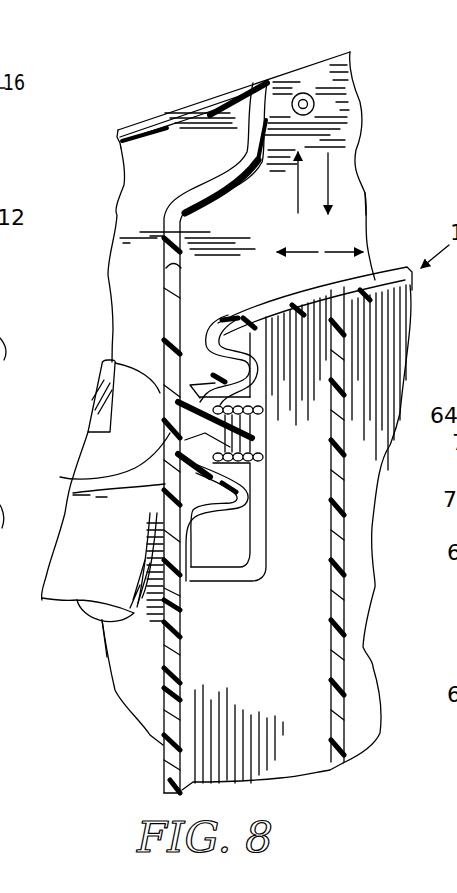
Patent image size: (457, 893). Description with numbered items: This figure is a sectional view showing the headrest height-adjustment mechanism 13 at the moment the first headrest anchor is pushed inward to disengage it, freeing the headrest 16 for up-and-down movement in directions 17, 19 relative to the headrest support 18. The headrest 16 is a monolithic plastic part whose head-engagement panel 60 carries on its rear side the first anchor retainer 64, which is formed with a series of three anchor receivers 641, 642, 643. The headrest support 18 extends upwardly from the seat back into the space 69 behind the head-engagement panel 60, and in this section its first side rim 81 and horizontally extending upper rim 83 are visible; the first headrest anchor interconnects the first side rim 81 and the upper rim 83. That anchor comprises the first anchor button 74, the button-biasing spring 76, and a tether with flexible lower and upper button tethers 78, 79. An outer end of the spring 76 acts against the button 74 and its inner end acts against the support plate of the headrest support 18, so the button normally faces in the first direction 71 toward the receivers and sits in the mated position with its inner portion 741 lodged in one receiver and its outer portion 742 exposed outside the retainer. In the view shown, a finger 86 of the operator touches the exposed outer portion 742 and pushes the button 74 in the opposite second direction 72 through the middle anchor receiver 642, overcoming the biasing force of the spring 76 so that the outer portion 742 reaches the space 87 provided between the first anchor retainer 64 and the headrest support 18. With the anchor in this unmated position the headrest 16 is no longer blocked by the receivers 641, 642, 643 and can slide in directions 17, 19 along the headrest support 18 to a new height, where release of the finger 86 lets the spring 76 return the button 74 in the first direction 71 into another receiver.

The headrest 16 is at (373, 113).
The space 69 is at (320, 153).
The down direction 19 is at (340, 210).
The up direction 17 is at (296, 190).
The head-engagement panel 60 is at (350, 225).
The second direction 72 is at (342, 251).
The first direction 71 is at (300, 252).
The first anchor retainer 64 is at (165, 243).
The anchor receiver 643 is at (166, 273).
The space 87 is at (189, 360).
The headrest height-adjustment mechanism 13 is at (140, 343).
The upper rim 83 is at (353, 290).
The headrest support 18 is at (385, 688).
The button-biasing spring 76 is at (268, 436).
The upper button tether 79 is at (250, 385).
The lower button tether 78 is at (225, 508).
The first anchor button 74 is at (168, 433).
The inner portion 741 is at (70, 478).
The outer portion 742 is at (165, 500).
The anchor receiver 642 is at (158, 407).
The anchor receiver 641 is at (163, 578).
The finger 86 is at (68, 574).
The first side rim 81 is at (184, 650).